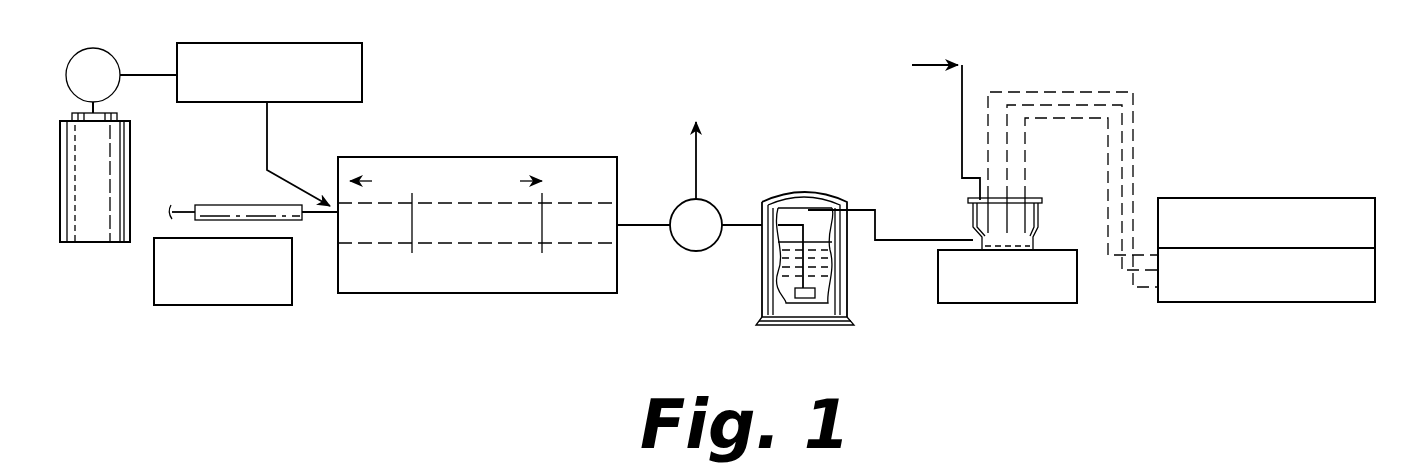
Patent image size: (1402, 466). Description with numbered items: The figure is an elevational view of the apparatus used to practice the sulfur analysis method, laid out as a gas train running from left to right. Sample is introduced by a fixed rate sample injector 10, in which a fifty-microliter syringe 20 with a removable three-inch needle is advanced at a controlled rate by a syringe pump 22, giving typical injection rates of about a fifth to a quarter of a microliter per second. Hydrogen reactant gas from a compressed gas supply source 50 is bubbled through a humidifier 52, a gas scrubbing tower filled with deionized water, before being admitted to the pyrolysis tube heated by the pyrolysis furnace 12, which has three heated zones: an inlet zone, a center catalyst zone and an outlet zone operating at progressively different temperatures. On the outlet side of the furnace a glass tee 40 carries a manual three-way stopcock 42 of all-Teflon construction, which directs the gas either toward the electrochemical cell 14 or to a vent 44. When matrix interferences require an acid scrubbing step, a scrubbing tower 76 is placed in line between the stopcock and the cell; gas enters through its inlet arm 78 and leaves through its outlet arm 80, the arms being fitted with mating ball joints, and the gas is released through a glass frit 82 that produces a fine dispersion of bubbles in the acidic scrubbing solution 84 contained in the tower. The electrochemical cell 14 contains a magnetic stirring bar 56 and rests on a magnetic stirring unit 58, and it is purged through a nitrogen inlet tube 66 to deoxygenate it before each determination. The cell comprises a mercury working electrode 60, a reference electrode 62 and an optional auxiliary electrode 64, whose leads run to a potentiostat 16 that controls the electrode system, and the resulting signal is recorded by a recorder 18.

The fixed rate sample injector 10 is at (175, 313).
The pyrolysis furnace 12 is at (484, 148).
The electrochemical cell 14 is at (764, 118).
The potentiostat 16 is at (1287, 292).
The recorder 18 is at (1333, 202).
The syringe 20 is at (230, 215).
The syringe pump 22 is at (263, 296).
The glass tee 40 is at (643, 223).
The manual three-way stopcock 42 is at (707, 241).
The vent 44 is at (697, 172).
The compressed gas supply source 50 is at (117, 162).
The humidifier 52 is at (362, 58).
The magnetic stirring bar 56 is at (1040, 238).
The magnetic stirring unit 58 is at (1067, 292).
The mercury working electrode 60 is at (1015, 90).
The reference electrode 62 is at (1048, 102).
The auxiliary electrode 64 is at (1083, 120).
The nitrogen inlet tube 66 is at (932, 62).
The scrubbing tower 76 is at (806, 332).
The inlet arm 78 is at (742, 223).
The outlet arm 80 is at (845, 212).
The glass frit 82 is at (812, 296).
The acidic scrubbing solution 84 is at (785, 268).